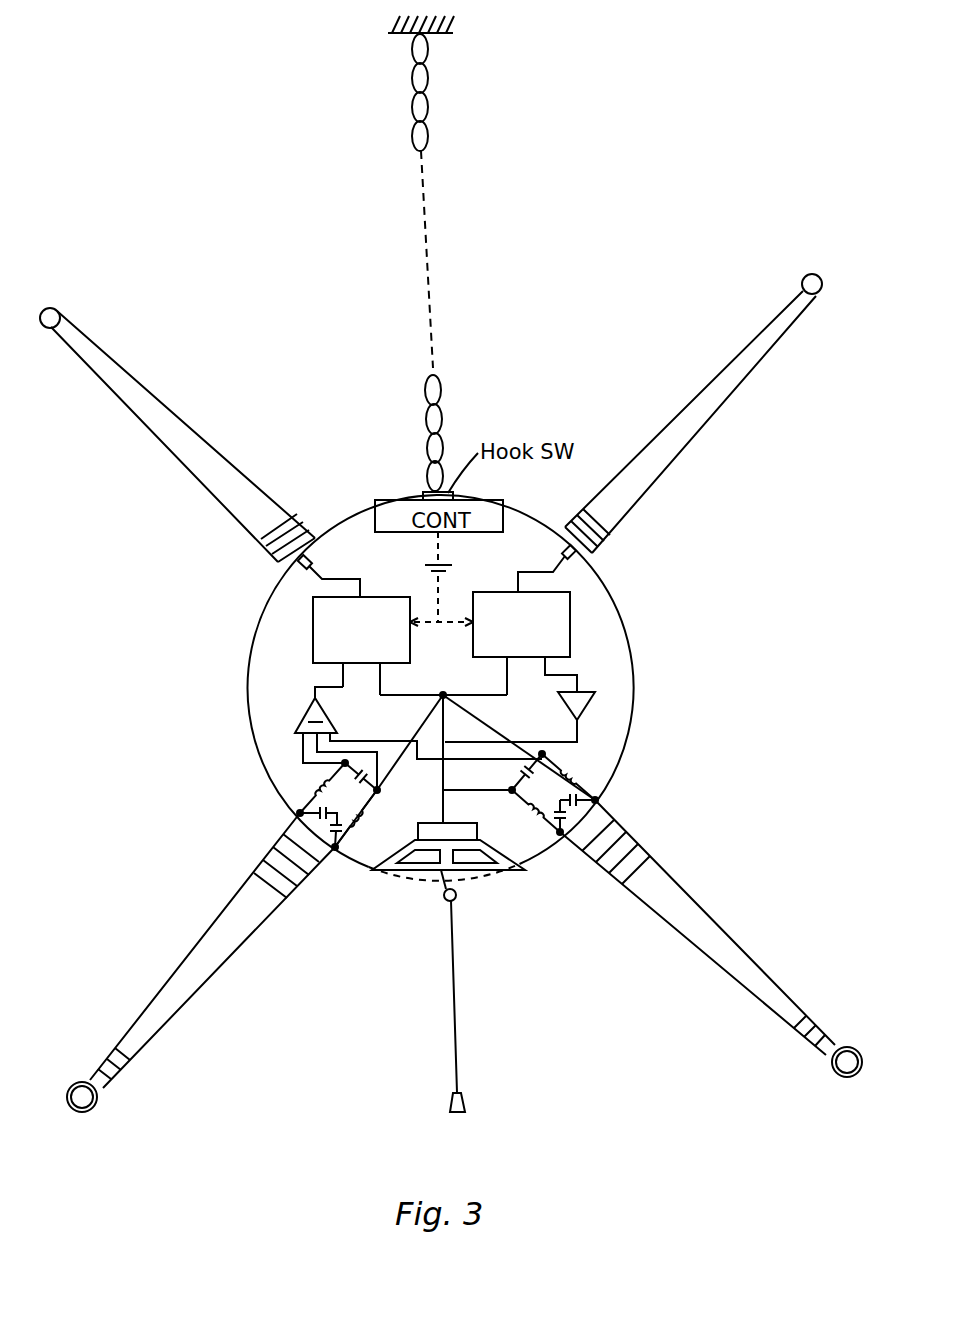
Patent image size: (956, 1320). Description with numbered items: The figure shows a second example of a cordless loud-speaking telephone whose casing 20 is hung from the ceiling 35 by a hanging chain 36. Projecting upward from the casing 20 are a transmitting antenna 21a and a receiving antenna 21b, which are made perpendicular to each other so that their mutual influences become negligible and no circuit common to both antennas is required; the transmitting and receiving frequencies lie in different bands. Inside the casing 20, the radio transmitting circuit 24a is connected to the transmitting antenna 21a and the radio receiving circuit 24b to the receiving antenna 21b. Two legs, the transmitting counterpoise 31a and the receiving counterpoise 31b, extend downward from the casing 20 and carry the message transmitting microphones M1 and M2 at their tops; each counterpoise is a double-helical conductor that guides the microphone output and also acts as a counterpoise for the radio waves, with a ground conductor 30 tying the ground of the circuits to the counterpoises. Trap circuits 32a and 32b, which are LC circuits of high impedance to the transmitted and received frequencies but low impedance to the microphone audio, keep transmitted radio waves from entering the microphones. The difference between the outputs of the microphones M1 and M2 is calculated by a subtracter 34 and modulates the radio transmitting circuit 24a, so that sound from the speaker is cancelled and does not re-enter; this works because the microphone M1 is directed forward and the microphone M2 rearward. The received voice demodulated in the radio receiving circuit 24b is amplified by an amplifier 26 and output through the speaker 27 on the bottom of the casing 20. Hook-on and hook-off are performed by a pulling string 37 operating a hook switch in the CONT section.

The ceiling 35 is at (452, 24).
The hanging chain 36 is at (437, 390).
The transmitting antenna 21a is at (156, 400).
The receiving antenna 21b is at (720, 380).
The radio transmitting circuit 24a is at (313, 628).
The radio receiving circuit 24b is at (572, 606).
The casing 20 is at (636, 650).
The subtracter 34 is at (296, 722).
The amplifier 26 is at (592, 712).
The ground conductor 30 is at (465, 710).
The trap circuit 32a is at (305, 793).
The trap circuit 32b is at (586, 773).
The speaker 27 is at (443, 900).
The pulling string 37 is at (457, 1043).
The transmitting counterpoise 31a is at (199, 992).
The receiving counterpoise 31b is at (688, 933).
The transmitting microphone M1 is at (88, 1097).
The receiving microphone M2 is at (838, 1062).